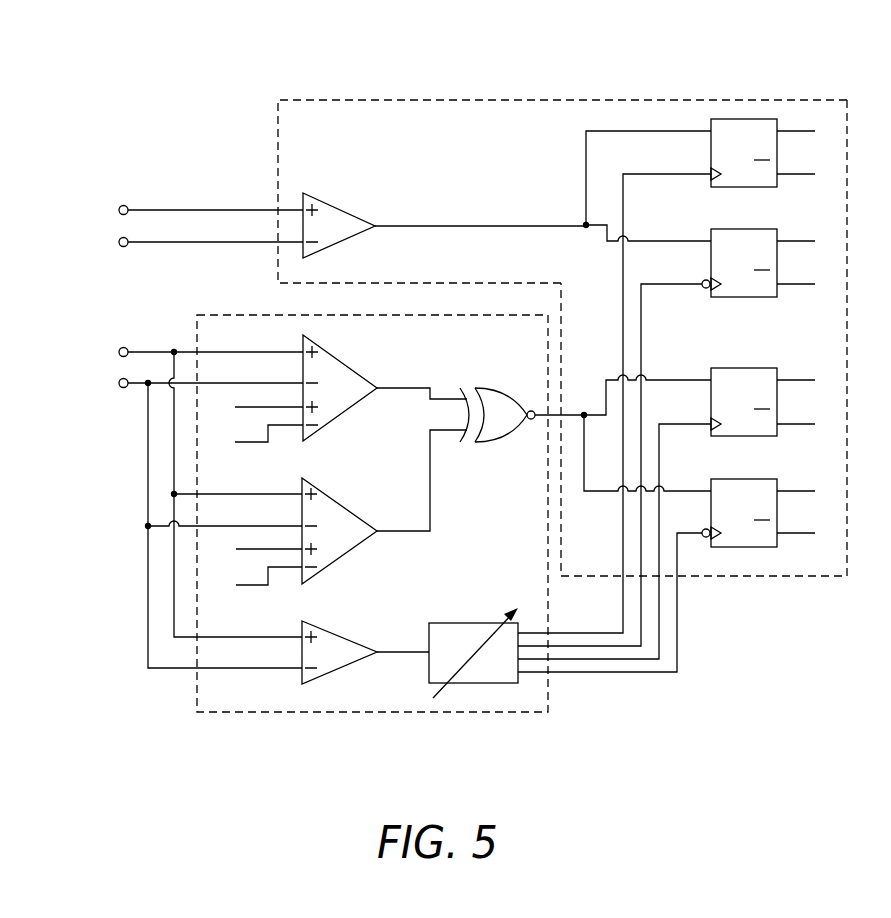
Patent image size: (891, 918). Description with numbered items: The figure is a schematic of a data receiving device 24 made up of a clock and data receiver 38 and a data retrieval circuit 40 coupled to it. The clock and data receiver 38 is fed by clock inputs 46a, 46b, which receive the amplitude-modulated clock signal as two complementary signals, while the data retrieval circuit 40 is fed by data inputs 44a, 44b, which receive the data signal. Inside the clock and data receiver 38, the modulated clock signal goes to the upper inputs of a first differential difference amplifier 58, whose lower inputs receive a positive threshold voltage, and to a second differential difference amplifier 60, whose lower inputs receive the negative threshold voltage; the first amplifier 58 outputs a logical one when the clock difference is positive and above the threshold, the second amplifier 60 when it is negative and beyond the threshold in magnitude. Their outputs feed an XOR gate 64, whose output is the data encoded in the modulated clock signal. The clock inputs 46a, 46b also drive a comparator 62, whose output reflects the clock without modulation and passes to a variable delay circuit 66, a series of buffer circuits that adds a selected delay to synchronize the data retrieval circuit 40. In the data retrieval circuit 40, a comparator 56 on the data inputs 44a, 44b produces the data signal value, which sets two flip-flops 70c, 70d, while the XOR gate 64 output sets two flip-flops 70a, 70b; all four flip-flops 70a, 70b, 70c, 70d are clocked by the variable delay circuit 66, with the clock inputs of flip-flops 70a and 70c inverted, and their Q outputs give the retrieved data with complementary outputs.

The data receiving device 24 is at (240, 100).
The clock and data receiver 38 is at (364, 734).
The data retrieval circuit 40 is at (681, 76).
The data input 44a is at (120, 206).
The data input 44b is at (120, 246).
The clock input 46a is at (120, 348).
The clock input 46b is at (120, 387).
The comparator 56 is at (338, 205).
The first differential difference amplifier 58 is at (342, 360).
The second differential difference amplifier 60 is at (342, 503).
The comparator 62 is at (342, 632).
The XOR gate 64 is at (492, 389).
The variable delay circuit 66 is at (450, 623).
The flip-flop 70a is at (777, 511).
The flip-flop 70b is at (777, 401).
The flip-flop 70c is at (777, 263).
The flip-flop 70d is at (777, 153).